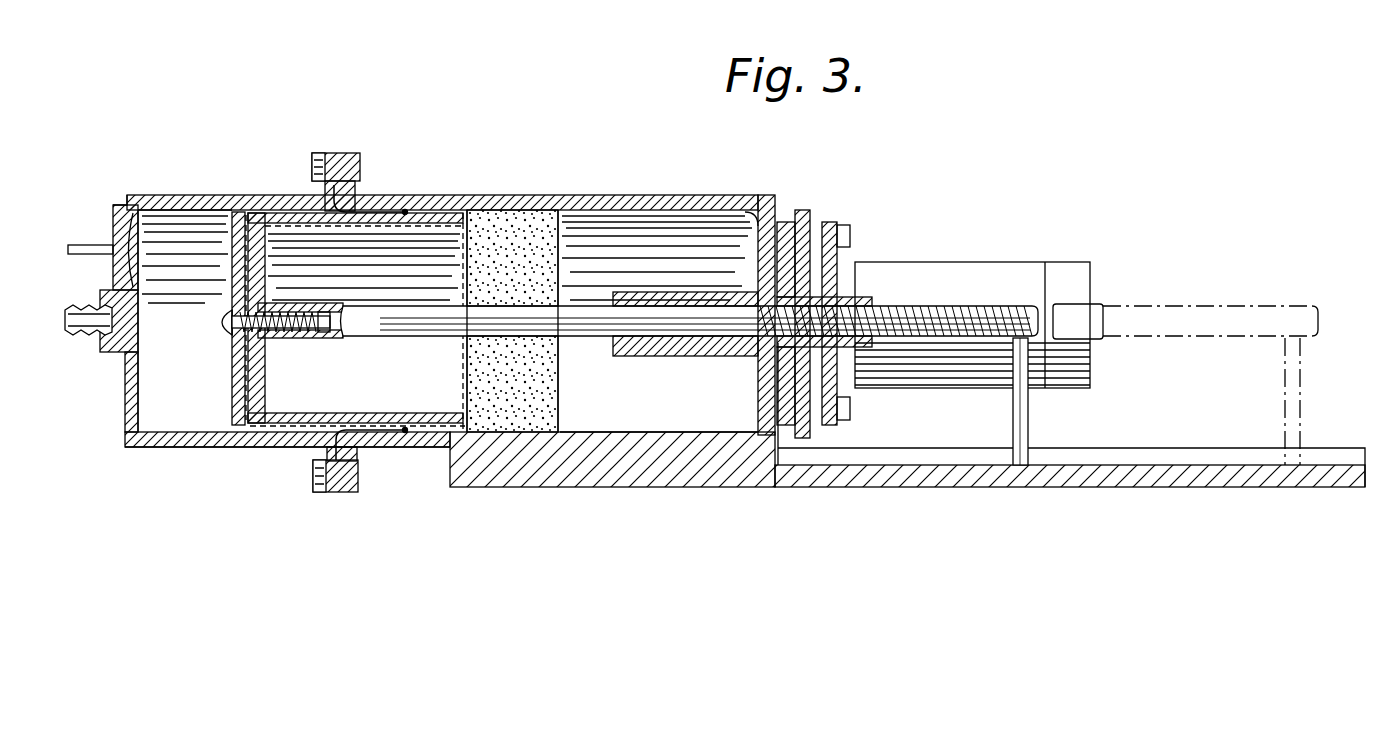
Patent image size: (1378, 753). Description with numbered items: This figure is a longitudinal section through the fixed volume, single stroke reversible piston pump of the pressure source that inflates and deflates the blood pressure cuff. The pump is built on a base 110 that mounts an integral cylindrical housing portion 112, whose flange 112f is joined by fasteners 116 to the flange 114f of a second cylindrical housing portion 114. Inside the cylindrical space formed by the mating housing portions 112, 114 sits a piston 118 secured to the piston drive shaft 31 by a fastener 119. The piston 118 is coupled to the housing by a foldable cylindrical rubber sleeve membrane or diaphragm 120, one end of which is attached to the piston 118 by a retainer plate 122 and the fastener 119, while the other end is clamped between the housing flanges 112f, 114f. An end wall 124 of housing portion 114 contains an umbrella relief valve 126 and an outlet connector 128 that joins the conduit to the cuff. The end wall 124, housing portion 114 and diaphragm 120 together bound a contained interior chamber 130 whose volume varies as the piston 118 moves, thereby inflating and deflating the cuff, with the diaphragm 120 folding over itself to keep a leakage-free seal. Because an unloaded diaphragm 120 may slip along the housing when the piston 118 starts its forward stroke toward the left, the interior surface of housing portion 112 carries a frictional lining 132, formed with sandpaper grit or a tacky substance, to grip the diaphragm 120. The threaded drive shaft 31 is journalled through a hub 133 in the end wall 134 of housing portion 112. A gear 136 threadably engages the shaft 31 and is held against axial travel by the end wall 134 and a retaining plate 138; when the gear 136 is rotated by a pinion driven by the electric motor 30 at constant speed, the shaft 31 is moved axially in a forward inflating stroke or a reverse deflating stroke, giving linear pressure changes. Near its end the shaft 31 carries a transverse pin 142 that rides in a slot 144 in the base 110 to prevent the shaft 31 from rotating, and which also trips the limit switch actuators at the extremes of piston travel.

The electric motor 30 is at (905, 270).
The piston drive shaft 31 is at (390, 337).
The base 110 is at (635, 478).
The cylindrical housing portion 112 is at (600, 195).
The flange 112f is at (345, 152).
The second cylindrical housing portion 114 is at (185, 195).
The flange 114f is at (330, 152).
The fasteners 116 is at (362, 165).
The piston 118 is at (365, 411).
The fastener 119 is at (300, 332).
The diaphragm 120 is at (290, 212).
The retainer plate 122 is at (235, 375).
The end wall 124 is at (125, 375).
The umbrella relief valve 126 is at (113, 228).
The outlet connector 128 is at (66, 318).
The interior chamber 130 is at (200, 342).
The frictional lining 132 is at (515, 430).
The hub 133 is at (645, 356).
The end wall 134 is at (760, 378).
The gear 136 is at (810, 200).
The retaining plate 138 is at (840, 225).
The transverse pin 142 is at (1013, 410).
The slot 144 is at (1115, 450).